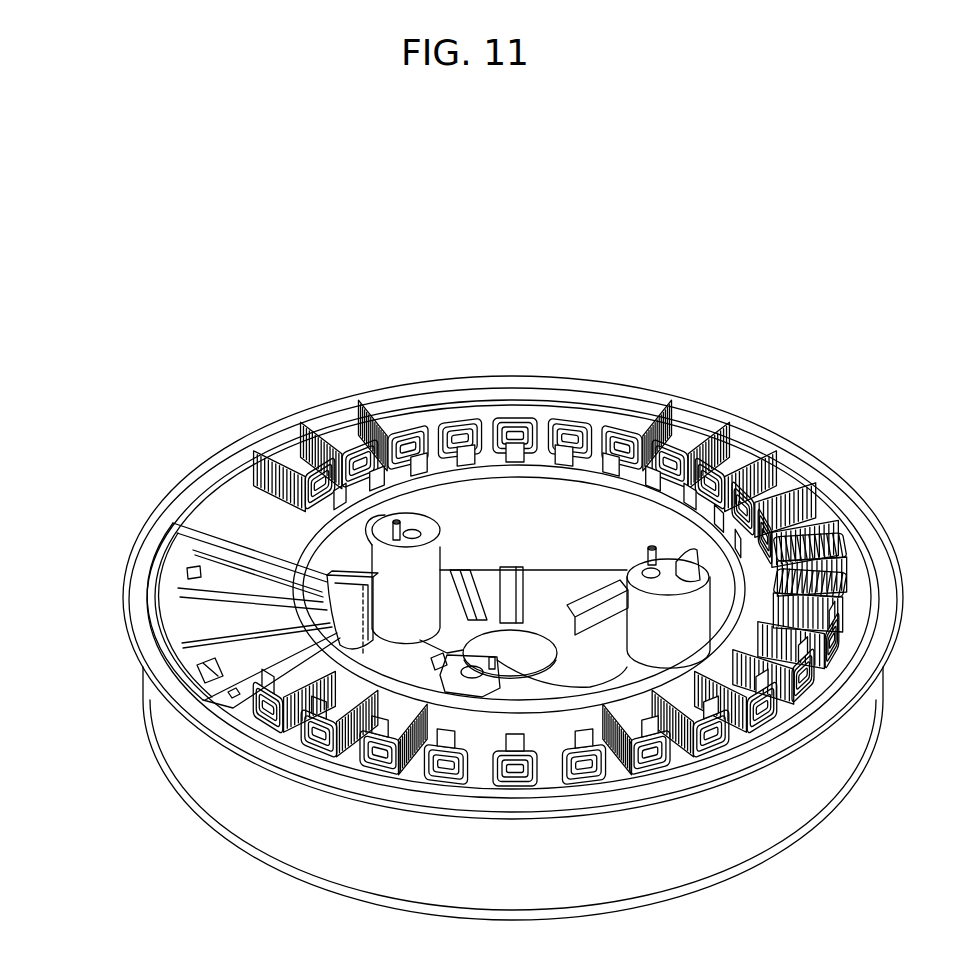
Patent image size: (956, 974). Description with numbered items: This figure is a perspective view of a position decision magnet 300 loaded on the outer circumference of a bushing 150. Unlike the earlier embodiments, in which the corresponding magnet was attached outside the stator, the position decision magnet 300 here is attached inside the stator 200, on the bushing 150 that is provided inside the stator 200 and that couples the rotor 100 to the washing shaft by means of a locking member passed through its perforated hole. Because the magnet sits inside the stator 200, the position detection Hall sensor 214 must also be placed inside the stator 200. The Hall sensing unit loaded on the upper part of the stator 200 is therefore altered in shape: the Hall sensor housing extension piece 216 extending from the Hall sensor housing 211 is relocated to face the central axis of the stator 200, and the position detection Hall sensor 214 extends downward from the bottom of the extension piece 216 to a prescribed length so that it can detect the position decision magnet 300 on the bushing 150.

The rotor 100 is at (187, 745).
The bushing 150 is at (577, 675).
The stator 200 is at (615, 408).
The Hall sensor housing 211 is at (212, 567).
The position detection Hall sensor 214 is at (358, 628).
The Hall sensor housing extension piece 216 is at (350, 588).
The position decision magnet 300 is at (436, 655).